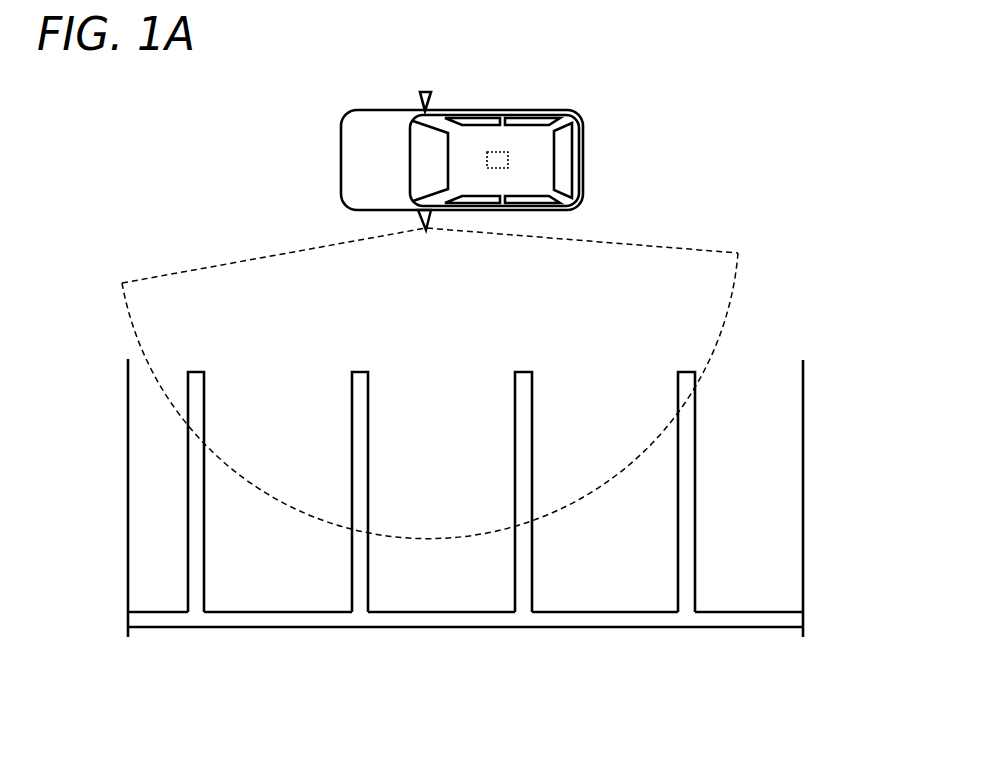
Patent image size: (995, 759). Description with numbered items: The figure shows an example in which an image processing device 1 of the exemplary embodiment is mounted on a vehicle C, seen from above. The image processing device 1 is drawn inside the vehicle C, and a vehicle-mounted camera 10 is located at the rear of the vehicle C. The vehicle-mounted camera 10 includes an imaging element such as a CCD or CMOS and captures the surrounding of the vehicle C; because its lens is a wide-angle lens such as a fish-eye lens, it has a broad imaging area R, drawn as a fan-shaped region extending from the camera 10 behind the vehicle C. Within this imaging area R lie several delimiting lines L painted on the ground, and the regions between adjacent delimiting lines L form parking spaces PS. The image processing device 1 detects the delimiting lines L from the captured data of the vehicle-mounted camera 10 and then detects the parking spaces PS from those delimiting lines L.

The image processing device 1 is at (503, 151).
The vehicle C is at (577, 111).
The vehicle-mounted camera 10 is at (426, 232).
The imaging area R is at (645, 246).
The parking space PS is at (278, 422).
The delimiting line L is at (196, 550).